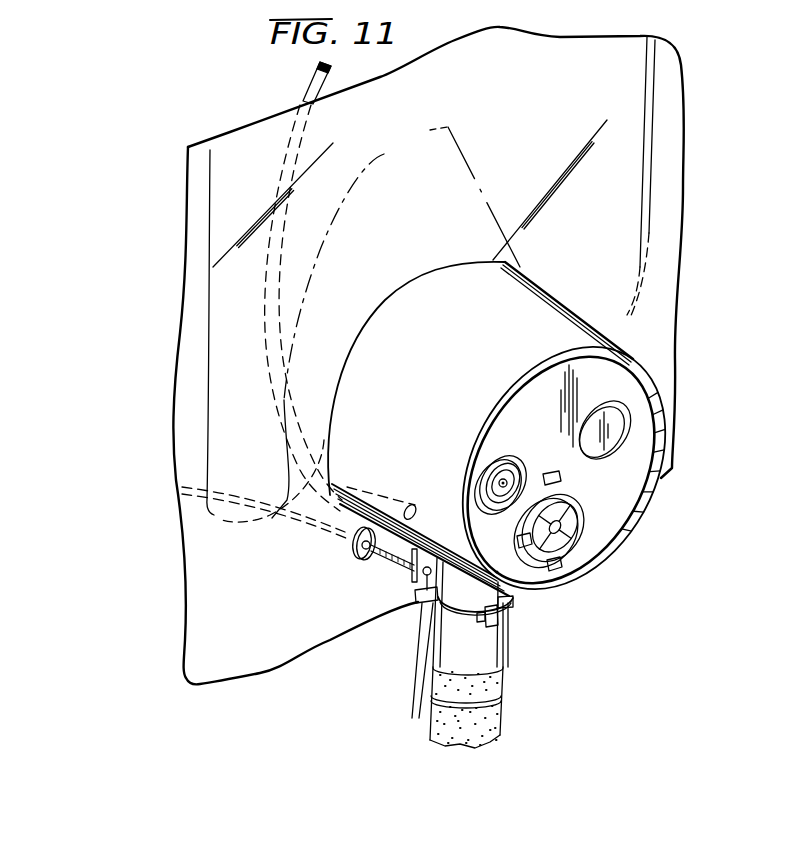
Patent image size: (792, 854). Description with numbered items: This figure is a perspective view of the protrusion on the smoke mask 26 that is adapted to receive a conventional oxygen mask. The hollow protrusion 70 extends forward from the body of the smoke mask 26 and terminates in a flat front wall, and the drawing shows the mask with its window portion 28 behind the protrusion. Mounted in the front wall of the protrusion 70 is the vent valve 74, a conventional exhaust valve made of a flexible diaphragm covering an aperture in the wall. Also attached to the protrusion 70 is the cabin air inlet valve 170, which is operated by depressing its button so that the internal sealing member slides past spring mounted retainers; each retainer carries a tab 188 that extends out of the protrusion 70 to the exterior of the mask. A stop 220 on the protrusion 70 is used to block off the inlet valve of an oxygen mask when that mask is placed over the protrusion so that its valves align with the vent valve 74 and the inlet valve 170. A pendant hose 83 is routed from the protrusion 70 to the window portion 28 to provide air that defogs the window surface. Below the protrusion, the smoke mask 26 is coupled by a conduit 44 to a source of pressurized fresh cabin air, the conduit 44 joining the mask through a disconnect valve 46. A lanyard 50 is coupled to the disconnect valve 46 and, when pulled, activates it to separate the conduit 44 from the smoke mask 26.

The smoke mask 26 is at (684, 258).
The window portion 28 is at (622, 200).
The pendant hose 83 is at (302, 92).
The hollow protrusion 70 is at (592, 326).
The stop 220 is at (615, 425).
The vent valve 74 is at (487, 474).
The cabin air inlet valve 170 is at (560, 548).
The tab 188 is at (549, 567).
The lanyard 50 is at (413, 698).
The disconnect valve 46 is at (497, 660).
The conduit 44 is at (490, 716).